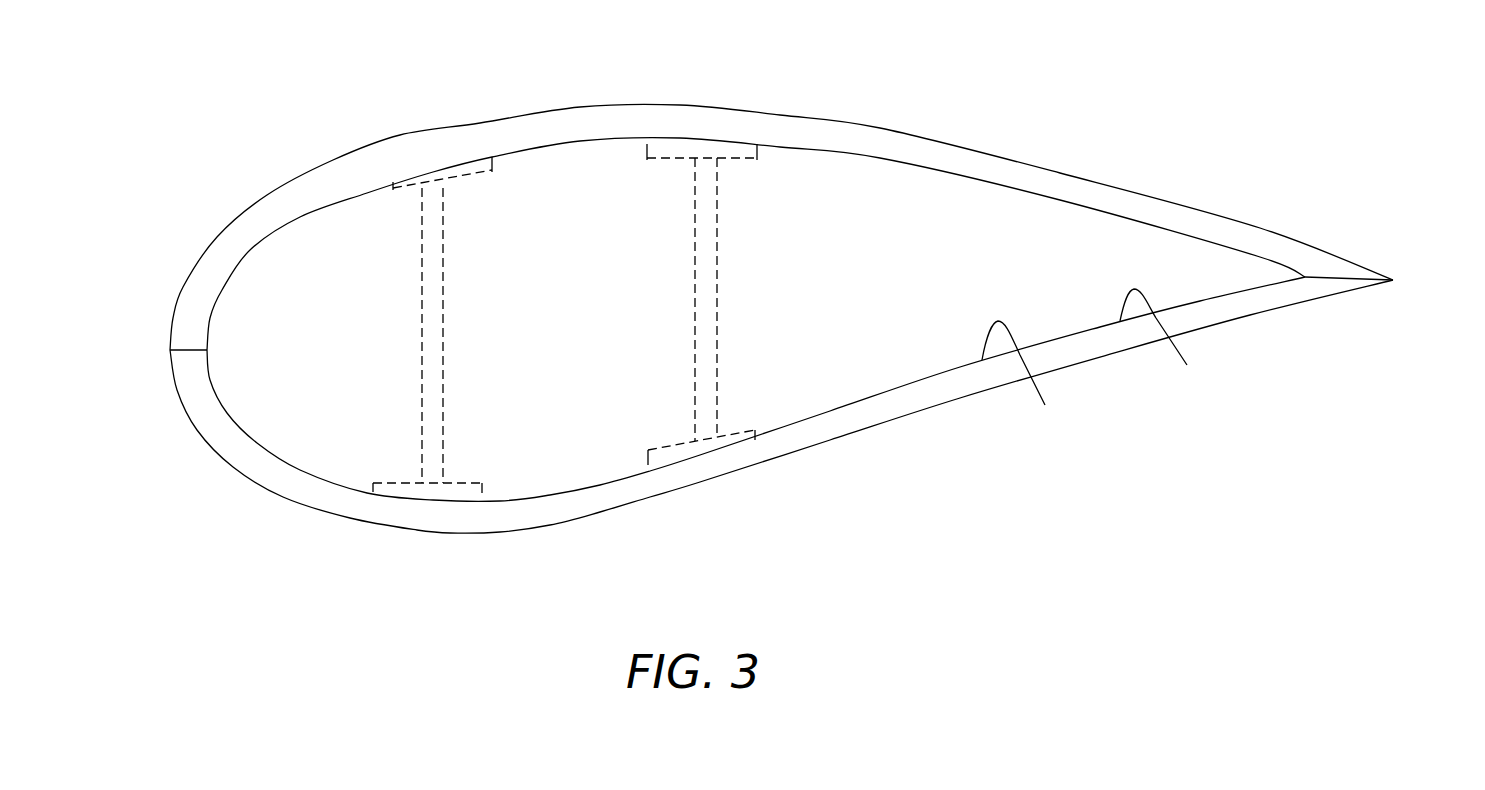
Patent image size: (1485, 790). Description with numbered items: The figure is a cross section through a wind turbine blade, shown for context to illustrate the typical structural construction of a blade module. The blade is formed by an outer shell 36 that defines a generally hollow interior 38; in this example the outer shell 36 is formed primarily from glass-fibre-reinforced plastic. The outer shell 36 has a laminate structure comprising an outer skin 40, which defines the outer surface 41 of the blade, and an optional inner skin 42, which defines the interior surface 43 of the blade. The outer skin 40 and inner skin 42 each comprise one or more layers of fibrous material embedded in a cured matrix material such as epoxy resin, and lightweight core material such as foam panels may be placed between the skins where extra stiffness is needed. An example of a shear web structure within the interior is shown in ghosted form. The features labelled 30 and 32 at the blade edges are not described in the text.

The leading edge 30 is at (170, 350).
The trailing edge 32 is at (1393, 280).
The skin wall 36 is at (781, 291).
The lower skin (pressure side) 38 is at (812, 370).
The inner surface of upper skin 40 is at (460, 127).
The upper skin outer surface (suction side) 41 is at (585, 106).
The first protrusion 42 is at (1045, 405).
The second protrusion 43 is at (1187, 365).